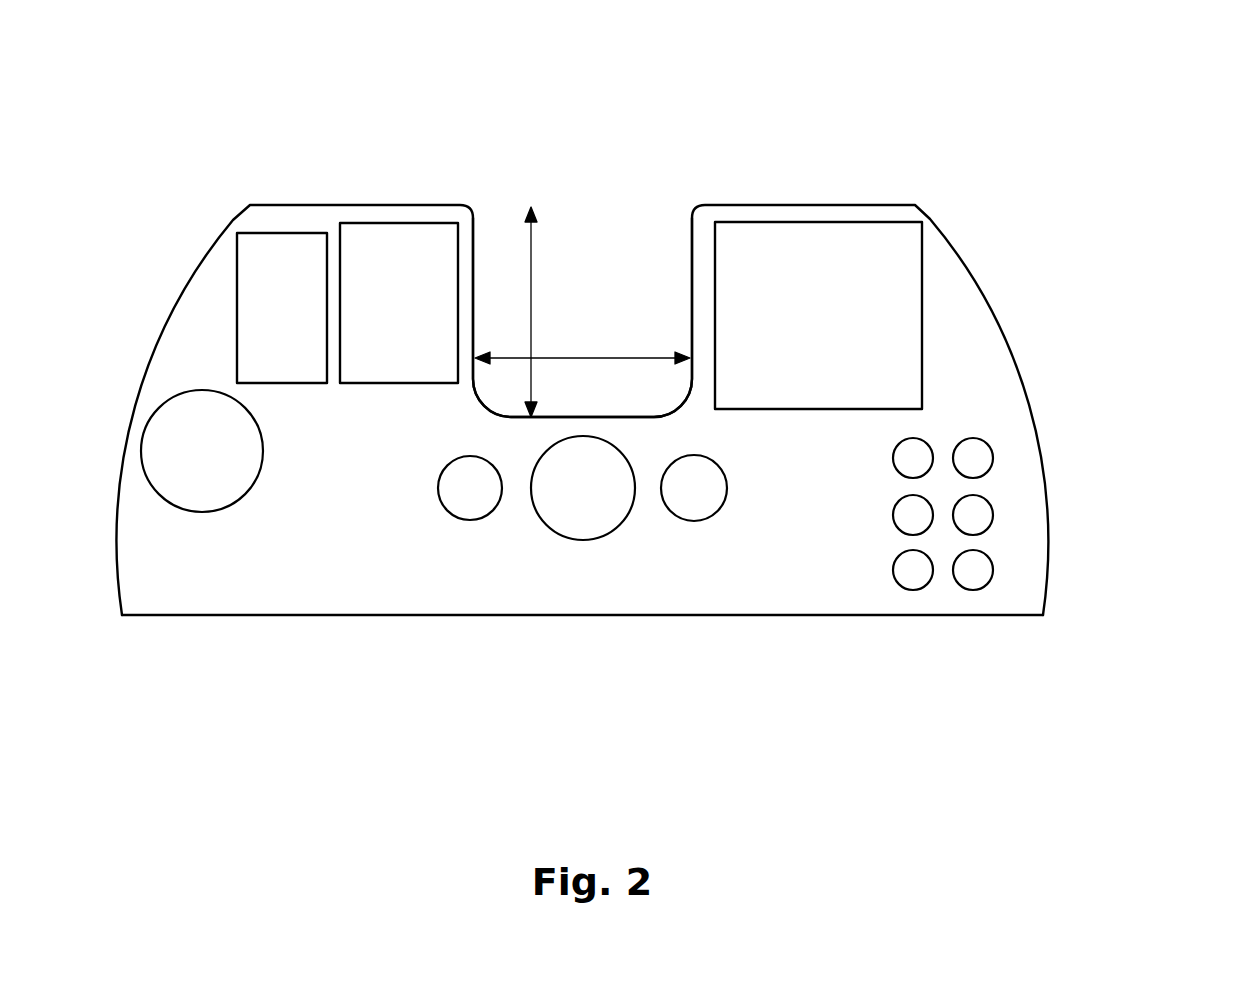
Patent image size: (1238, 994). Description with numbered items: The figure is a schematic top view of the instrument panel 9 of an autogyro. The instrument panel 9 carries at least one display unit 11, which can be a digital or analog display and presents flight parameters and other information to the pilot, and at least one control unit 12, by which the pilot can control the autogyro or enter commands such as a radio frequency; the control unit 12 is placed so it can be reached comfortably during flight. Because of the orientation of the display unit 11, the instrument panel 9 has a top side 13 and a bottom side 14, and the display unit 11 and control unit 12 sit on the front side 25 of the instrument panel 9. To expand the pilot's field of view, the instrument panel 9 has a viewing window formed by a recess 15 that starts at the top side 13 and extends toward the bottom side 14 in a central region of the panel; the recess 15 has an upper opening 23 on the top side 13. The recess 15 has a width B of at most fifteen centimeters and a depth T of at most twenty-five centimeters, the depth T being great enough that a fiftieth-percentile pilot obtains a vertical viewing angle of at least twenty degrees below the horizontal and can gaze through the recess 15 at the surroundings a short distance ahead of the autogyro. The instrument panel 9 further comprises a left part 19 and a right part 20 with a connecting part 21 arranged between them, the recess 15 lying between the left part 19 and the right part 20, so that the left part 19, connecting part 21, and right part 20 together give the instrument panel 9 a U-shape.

The instrument panel 9 is at (150, 131).
The display unit 11 is at (795, 270).
The control unit 12 is at (972, 458).
The top side 13 is at (345, 203).
The bottom side 14 is at (328, 615).
The recess 15 is at (629, 312).
The left part 19 is at (268, 527).
The right part 20 is at (841, 495).
The connecting part 21 is at (586, 563).
The upper opening 23 is at (602, 217).
The front side 25 is at (682, 568).
The depth T is at (530, 252).
The width B is at (598, 357).